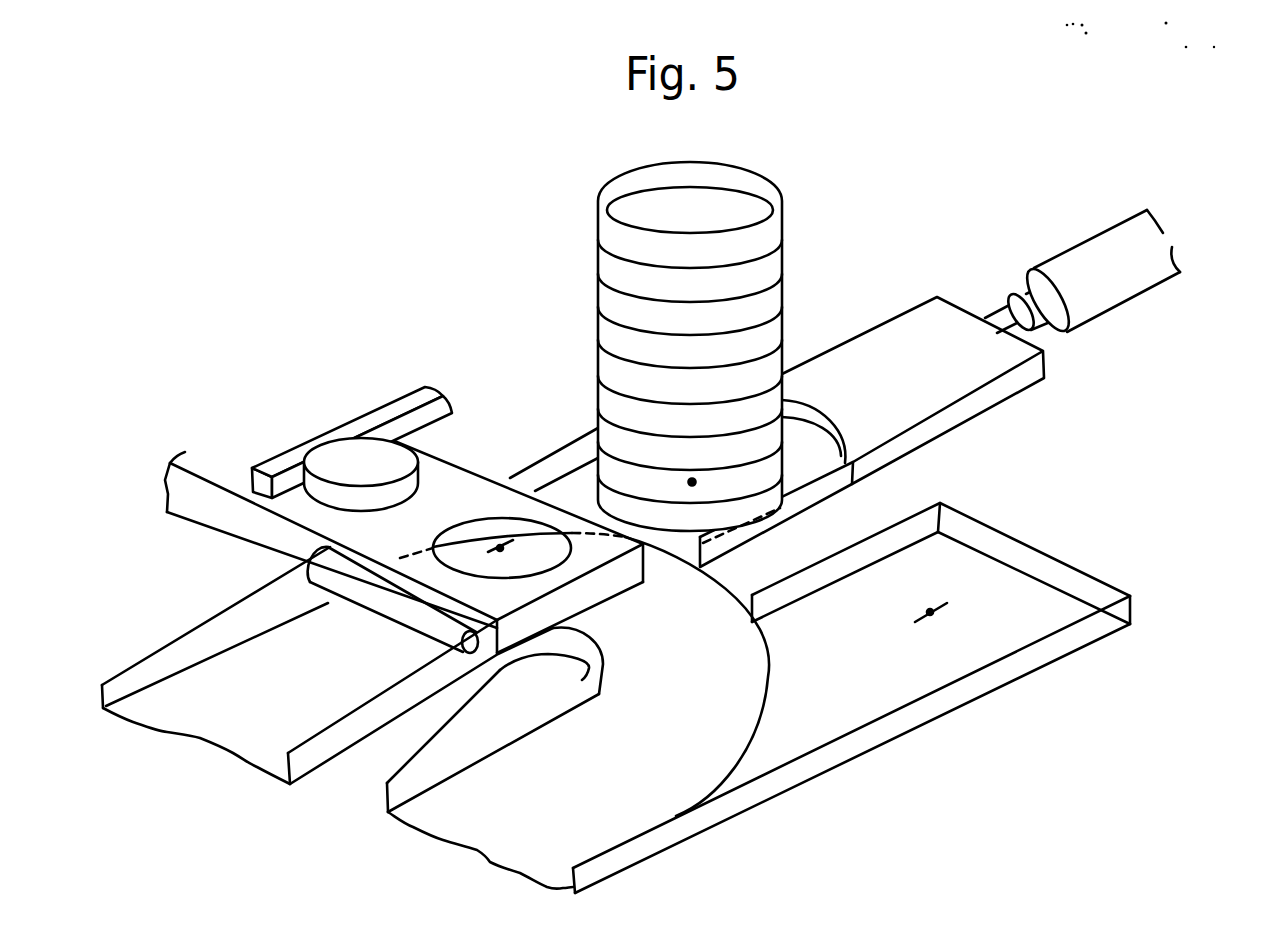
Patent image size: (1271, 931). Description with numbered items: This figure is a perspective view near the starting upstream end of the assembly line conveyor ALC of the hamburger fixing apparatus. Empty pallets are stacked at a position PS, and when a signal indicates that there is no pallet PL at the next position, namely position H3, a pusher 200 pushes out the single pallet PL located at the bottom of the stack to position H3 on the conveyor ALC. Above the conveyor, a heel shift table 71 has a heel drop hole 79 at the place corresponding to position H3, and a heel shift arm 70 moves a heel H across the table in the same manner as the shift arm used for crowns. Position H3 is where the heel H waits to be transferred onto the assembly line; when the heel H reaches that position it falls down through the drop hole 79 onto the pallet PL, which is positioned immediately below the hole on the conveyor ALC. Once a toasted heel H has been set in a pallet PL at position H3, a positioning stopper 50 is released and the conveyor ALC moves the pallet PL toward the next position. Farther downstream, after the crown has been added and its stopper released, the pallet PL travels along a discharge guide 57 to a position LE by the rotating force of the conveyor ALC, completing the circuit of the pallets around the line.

The pallet stacking position PS is at (692, 482).
The pallet PL is at (772, 254).
The heel shift arm 70 is at (390, 408).
The heel shift table 71 is at (475, 480).
The heel drop hole 79 is at (522, 523).
The heel H is at (338, 472).
The pusher 200 is at (962, 382).
The positioning stopper 50 is at (336, 601).
The discharge guide 57 is at (973, 687).
The discharge position LE is at (930, 612).
The heel waiting position H3 is at (500, 548).
The assembly line conveyor ALC is at (667, 802).